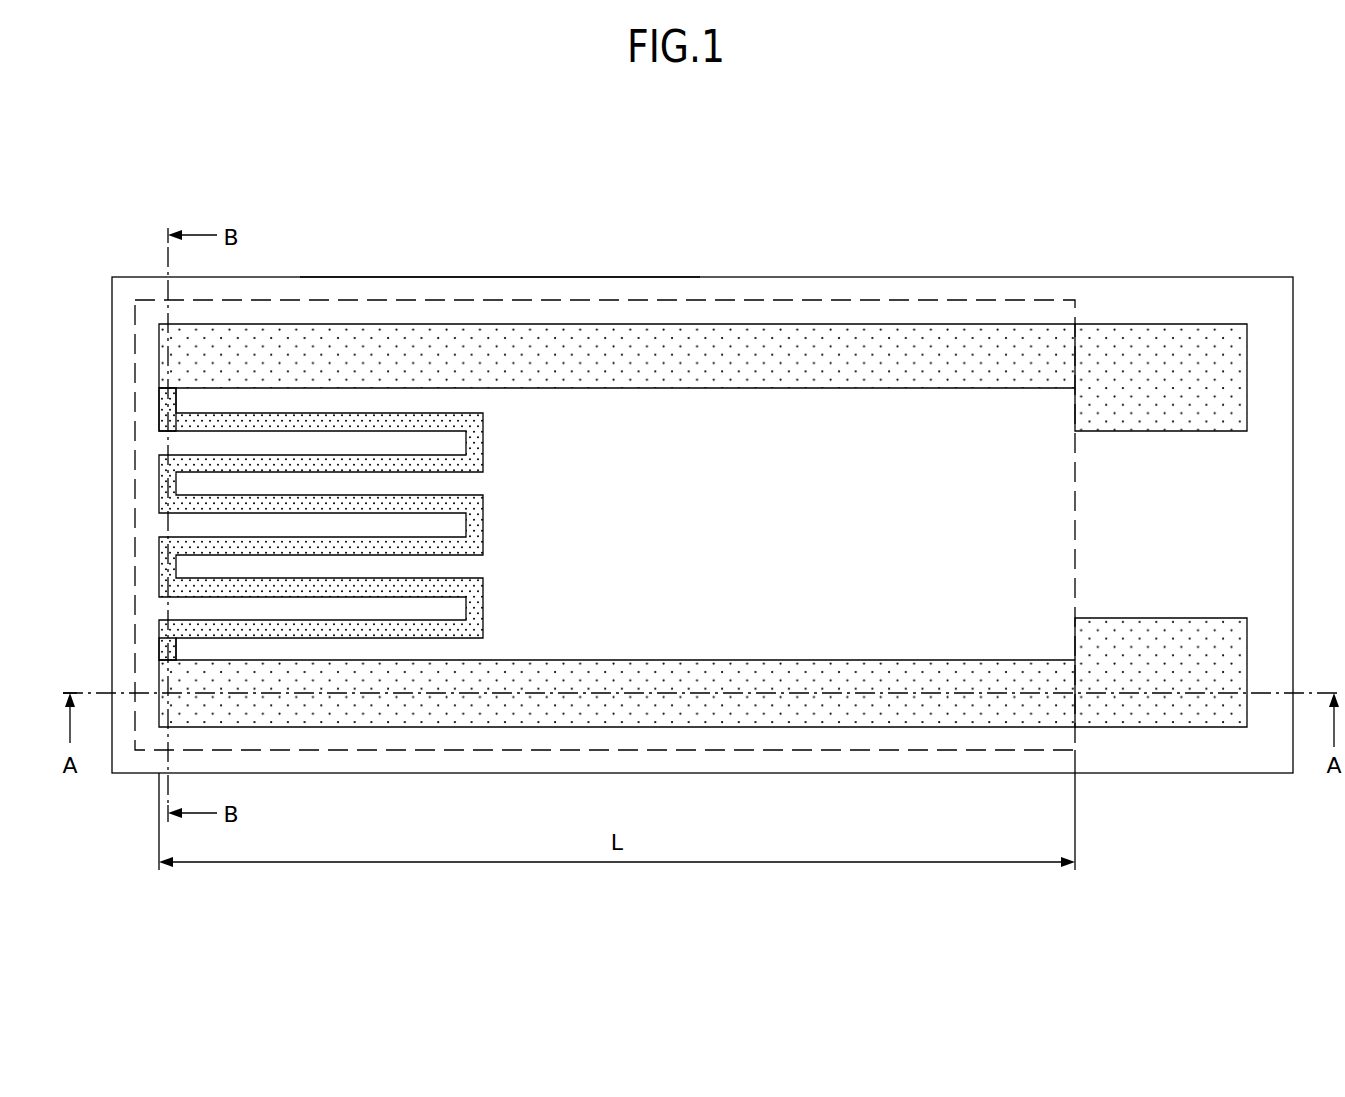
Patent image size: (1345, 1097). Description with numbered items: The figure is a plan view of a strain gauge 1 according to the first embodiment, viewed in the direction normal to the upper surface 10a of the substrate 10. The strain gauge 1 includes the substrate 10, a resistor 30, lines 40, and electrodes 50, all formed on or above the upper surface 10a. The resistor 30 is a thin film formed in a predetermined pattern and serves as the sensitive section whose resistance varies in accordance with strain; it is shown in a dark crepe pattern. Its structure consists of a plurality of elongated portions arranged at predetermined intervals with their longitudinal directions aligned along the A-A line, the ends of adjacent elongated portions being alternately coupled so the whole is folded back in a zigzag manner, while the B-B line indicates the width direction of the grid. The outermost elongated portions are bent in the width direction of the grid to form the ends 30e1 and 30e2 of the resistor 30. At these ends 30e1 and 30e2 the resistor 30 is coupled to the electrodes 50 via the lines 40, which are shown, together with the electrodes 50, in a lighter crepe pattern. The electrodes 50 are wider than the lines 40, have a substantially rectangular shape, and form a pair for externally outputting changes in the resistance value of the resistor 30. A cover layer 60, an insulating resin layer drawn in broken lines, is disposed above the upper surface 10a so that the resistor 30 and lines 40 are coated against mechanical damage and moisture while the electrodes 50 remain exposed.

The strain gauge 1 is at (56, 115).
The substrate 10 is at (441, 276).
The upper surface of the substrate 10a is at (561, 288).
The resistor 30 is at (323, 412).
The end of the resistor 30e1 is at (162, 387).
The end of the resistor 30e2 is at (162, 660).
The line 40 is at (852, 312).
The electrode 50 is at (1160, 312).
The cover layer 60 is at (972, 300).